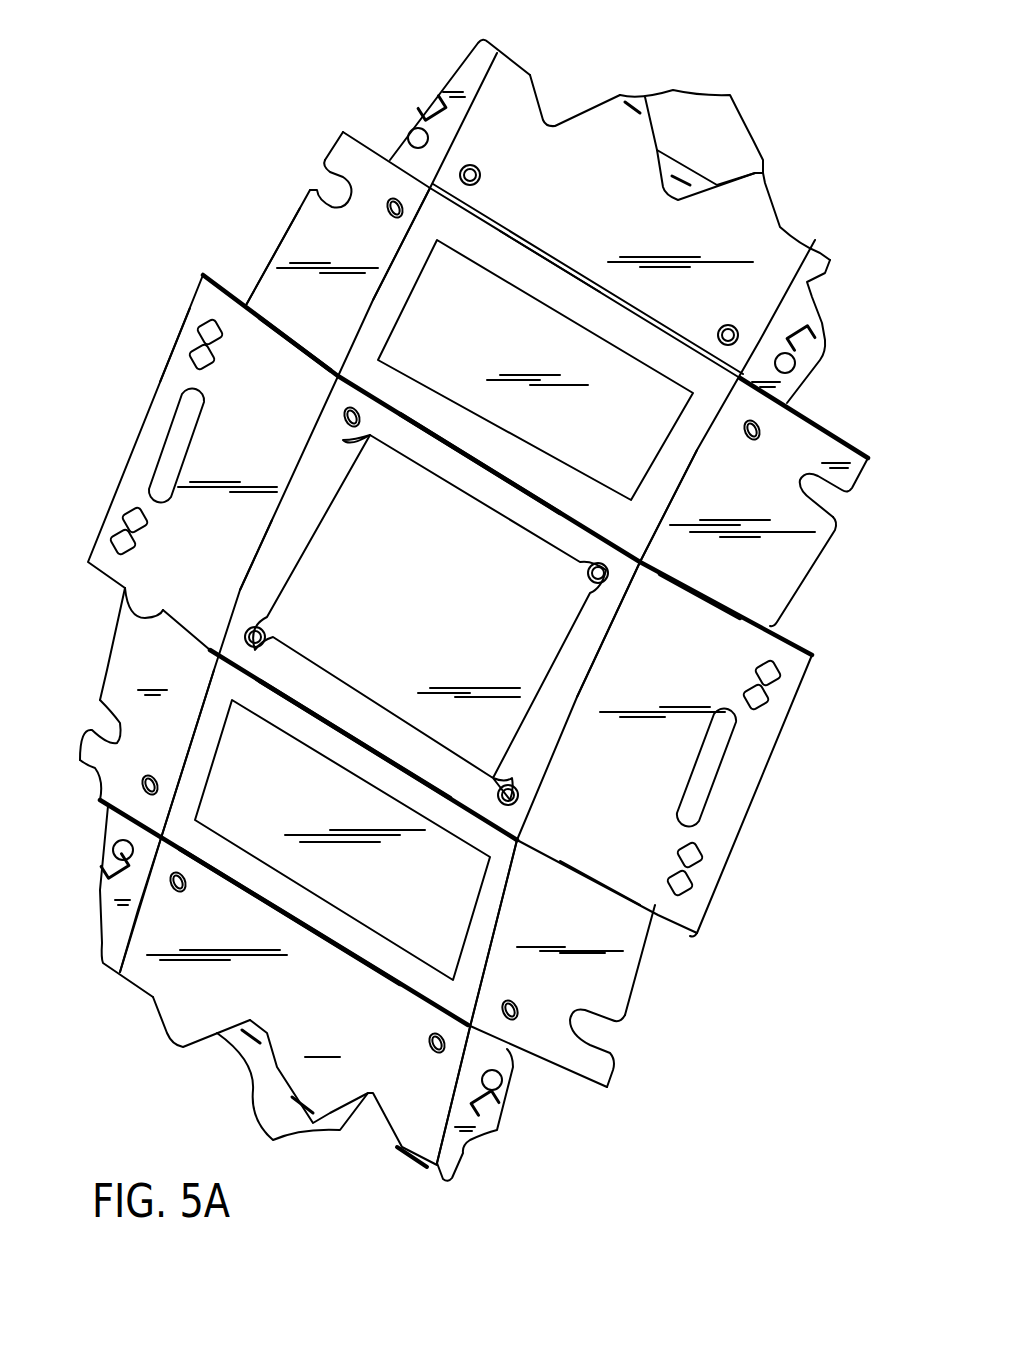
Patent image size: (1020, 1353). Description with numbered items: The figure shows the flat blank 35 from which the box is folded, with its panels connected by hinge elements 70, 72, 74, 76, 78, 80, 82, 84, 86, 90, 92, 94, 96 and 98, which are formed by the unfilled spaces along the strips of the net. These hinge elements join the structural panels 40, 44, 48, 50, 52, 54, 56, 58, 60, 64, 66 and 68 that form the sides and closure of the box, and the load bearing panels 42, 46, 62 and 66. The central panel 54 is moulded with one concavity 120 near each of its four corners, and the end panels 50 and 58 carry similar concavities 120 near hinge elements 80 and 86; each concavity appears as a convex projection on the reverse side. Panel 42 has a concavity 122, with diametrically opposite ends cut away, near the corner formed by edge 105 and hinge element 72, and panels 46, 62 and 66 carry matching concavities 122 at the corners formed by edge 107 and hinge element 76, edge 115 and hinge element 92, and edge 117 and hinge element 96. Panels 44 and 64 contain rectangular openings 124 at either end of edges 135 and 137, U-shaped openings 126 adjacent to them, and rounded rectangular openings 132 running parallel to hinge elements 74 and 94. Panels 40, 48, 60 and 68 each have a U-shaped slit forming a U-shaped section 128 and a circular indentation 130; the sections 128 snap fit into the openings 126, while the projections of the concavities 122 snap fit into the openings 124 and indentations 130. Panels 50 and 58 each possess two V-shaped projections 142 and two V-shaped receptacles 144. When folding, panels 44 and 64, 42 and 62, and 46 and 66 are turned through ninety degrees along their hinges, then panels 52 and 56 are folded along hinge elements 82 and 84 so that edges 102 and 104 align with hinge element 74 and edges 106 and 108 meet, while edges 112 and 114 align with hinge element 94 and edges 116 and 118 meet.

The blank 35 is at (648, 1027).
The structural panel 40 is at (473, 63).
The load bearing panel 42 is at (363, 243).
The structural panel 44 is at (259, 451).
The load bearing panel 46 is at (168, 731).
The structural panel 48 is at (112, 943).
The structural panel 50 is at (638, 196).
The structural panel 52 is at (538, 351).
The structural panel 54 is at (444, 634).
The structural panel 56 is at (336, 816).
The structural panel 58 is at (313, 1016).
The structural panel 60 is at (808, 282).
The load bearing panel 62 is at (724, 508).
The structural panel 64 is at (643, 774).
The load bearing panel 66 is at (624, 991).
The structural panel 68 is at (463, 1158).
The hinge element 70 is at (468, 115).
The hinge element 72 is at (387, 283).
The hinge element 74 is at (280, 510).
The hinge element 76 is at (190, 747).
The hinge element 78 is at (147, 900).
The hinge element 80 is at (588, 282).
The hinge element 82 is at (487, 463).
The hinge element 84 is at (335, 723).
The hinge element 86 is at (325, 937).
The hinge element 90 is at (777, 312).
The hinge element 92 is at (687, 463).
The hinge element 94 is at (577, 697).
The hinge element 96 is at (493, 923).
The hinge element 98 is at (453, 1080).
The edge 102 is at (313, 355).
The edge 104 is at (122, 617).
The edge 105 is at (370, 153).
The edge 106 is at (275, 247).
The edge 107 is at (83, 745).
The edge 108 is at (108, 655).
The edge 112 is at (692, 587).
The edge 114 is at (583, 875).
The edge 115 is at (820, 437).
The edge 116 is at (813, 573).
The edge 117 is at (535, 1070).
The edge 118 is at (645, 968).
The concavity 120 is at (480, 176).
The concavity 122 is at (405, 212).
The rectangular opening 124 is at (223, 337).
The U-shaped opening 126 is at (210, 360).
The U-shaped section 128 is at (420, 100).
The circular indentation 130 is at (410, 130).
The rectangular opening 132 is at (173, 440).
The edge 135 is at (165, 362).
The edge 137 is at (777, 747).
The V-shaped projection 142 is at (735, 75).
The V-shaped receptacle 144 is at (292, 1102).